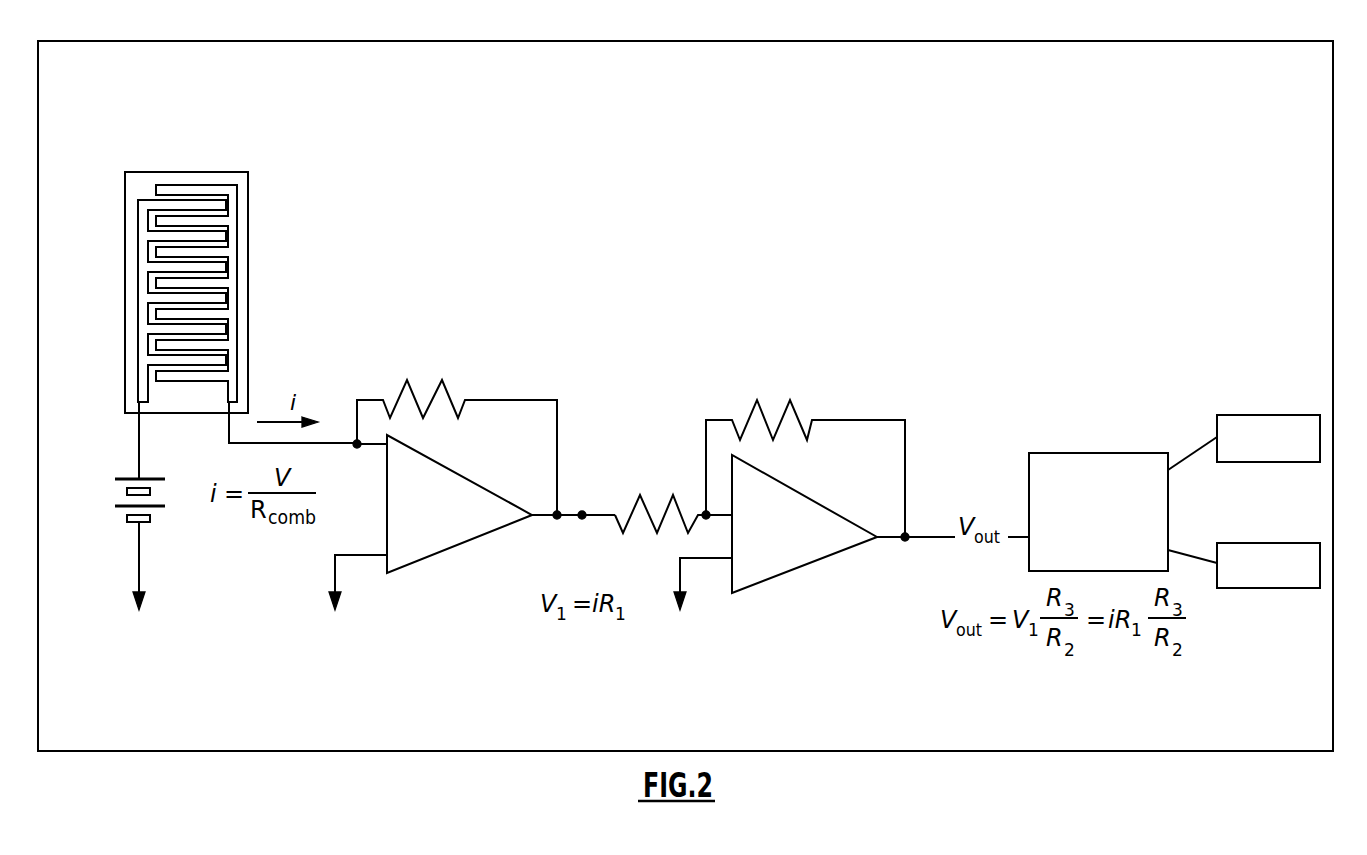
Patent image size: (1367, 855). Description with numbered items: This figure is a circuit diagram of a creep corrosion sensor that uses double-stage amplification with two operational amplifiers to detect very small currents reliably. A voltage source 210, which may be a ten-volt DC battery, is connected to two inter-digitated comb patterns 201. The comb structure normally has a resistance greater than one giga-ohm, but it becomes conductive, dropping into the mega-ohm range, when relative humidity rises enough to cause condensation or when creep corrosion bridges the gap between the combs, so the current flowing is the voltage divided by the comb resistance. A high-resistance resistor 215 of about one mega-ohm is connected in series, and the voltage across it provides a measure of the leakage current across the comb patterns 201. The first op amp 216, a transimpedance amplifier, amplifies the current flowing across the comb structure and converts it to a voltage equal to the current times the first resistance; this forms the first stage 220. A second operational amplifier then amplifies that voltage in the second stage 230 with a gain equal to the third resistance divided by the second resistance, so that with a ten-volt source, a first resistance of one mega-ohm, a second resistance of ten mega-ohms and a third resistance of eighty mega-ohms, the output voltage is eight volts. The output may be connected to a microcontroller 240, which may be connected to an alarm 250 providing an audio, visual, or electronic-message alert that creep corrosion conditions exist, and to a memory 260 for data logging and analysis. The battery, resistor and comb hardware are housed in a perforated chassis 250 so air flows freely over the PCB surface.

The inter-digitated comb patterns 201 is at (238, 200).
The voltage source 210 is at (108, 521).
The resistor 215 is at (462, 388).
The first op amp 216 is at (418, 562).
The first stage 220 is at (605, 466).
The second stage 230 is at (762, 585).
The microcontroller 240 is at (1062, 453).
The alarm 250 is at (765, 41).
The memory 260 is at (1258, 543).